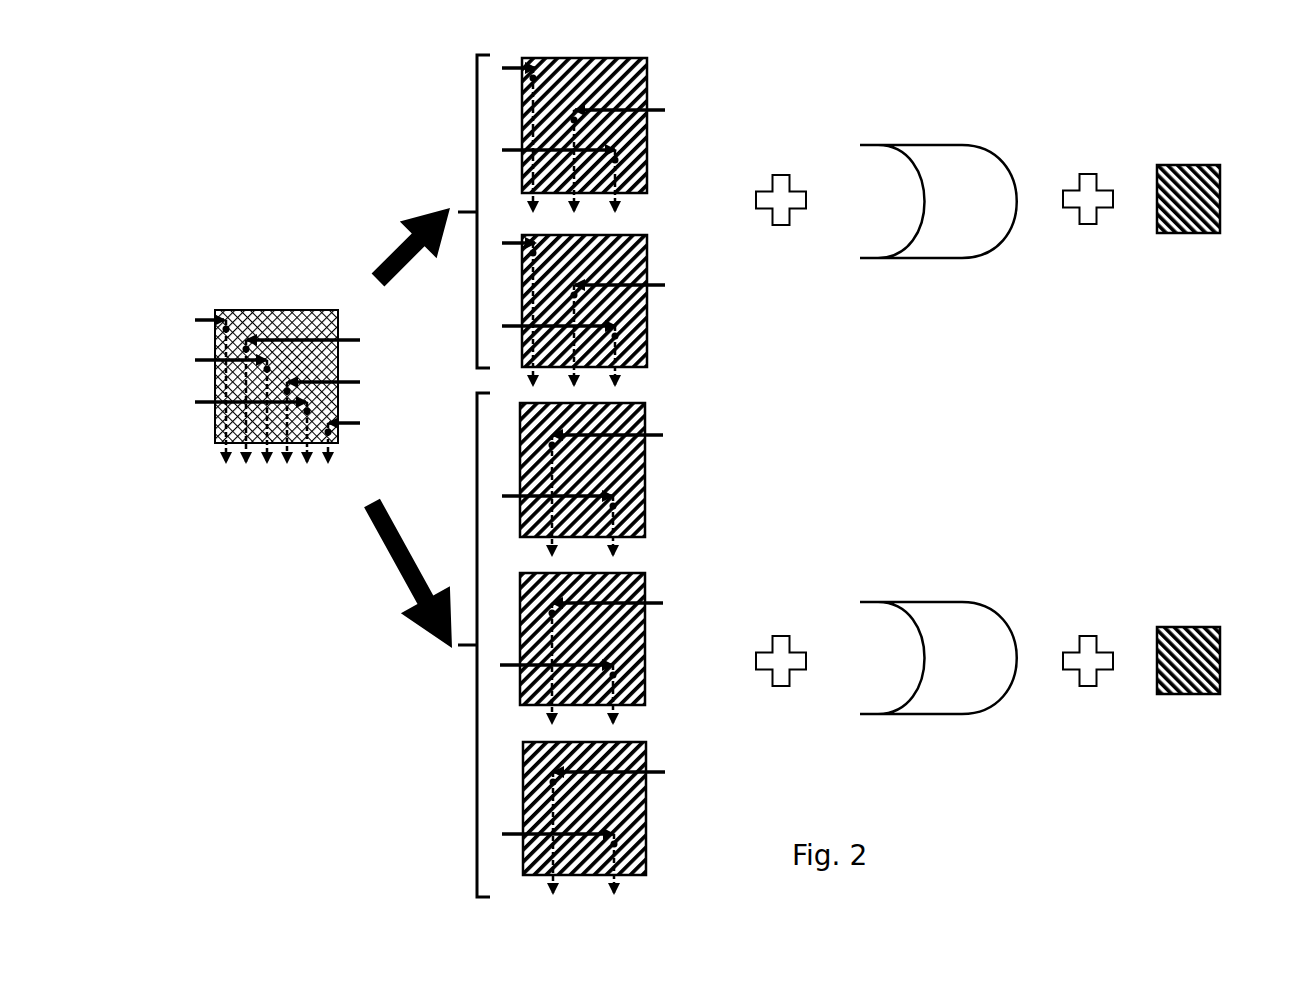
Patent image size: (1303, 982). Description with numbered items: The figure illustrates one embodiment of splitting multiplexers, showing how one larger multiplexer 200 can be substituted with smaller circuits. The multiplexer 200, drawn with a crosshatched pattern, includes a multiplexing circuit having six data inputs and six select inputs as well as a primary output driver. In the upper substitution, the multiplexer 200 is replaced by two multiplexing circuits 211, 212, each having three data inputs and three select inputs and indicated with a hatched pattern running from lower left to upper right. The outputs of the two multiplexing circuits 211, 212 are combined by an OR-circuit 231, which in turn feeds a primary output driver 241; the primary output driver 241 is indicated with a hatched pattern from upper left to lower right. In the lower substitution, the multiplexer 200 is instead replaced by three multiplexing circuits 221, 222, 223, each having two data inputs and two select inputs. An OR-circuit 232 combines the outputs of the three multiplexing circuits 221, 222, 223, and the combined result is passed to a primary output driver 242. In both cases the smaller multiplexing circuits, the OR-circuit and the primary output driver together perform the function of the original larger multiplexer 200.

The multiplexer 200 is at (290, 322).
The multiplexing circuit 211 is at (628, 95).
The multiplexing circuit 212 is at (627, 270).
The multiplexing circuit 221 is at (625, 420).
The multiplexing circuit 222 is at (624, 591).
The multiplexing circuit 223 is at (627, 760).
The OR-circuit 231 is at (943, 153).
The OR-circuit 232 is at (946, 613).
The primary output driver 241 is at (1203, 193).
The primary output driver 242 is at (1203, 653).